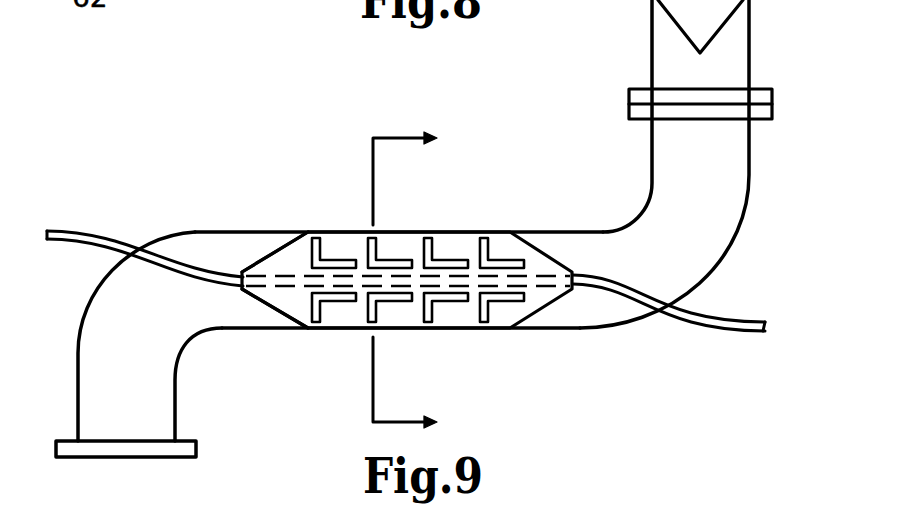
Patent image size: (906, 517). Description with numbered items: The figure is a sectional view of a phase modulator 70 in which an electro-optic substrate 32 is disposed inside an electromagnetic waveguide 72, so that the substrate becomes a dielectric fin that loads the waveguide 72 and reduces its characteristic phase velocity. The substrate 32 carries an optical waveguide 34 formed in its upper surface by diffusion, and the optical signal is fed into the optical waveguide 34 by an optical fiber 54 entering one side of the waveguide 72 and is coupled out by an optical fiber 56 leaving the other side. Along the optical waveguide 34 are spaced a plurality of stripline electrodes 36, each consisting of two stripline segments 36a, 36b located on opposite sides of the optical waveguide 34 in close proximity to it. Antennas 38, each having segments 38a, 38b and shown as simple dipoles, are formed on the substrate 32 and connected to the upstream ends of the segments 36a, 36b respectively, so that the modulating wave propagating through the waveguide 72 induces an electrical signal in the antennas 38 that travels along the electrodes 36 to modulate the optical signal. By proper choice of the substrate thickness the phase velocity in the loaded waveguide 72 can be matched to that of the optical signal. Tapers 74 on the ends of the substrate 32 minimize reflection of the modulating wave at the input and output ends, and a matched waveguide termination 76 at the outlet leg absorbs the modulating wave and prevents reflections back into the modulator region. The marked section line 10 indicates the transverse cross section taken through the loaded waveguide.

The section line 10- 10 is at (427, 280).
The substrate 32 is at (546, 293).
The optical waveguide 34 is at (283, 273).
The stripline electrical modulation electrode 36 is at (400, 251).
The stripline segment 36a is at (530, 213).
The stripline segment 36b is at (499, 340).
The antenna 38 is at (477, 226).
The antenna segment 38a is at (489, 245).
The antenna segment 38b is at (480, 307).
The optical fiber 54 is at (100, 234).
The optical fiber 56 is at (713, 324).
The phase modulator 70 is at (441, 228).
The electromagnetic waveguide 72 is at (750, 197).
The taper 74 is at (258, 300).
The matched waveguide termination 76 is at (750, 38).